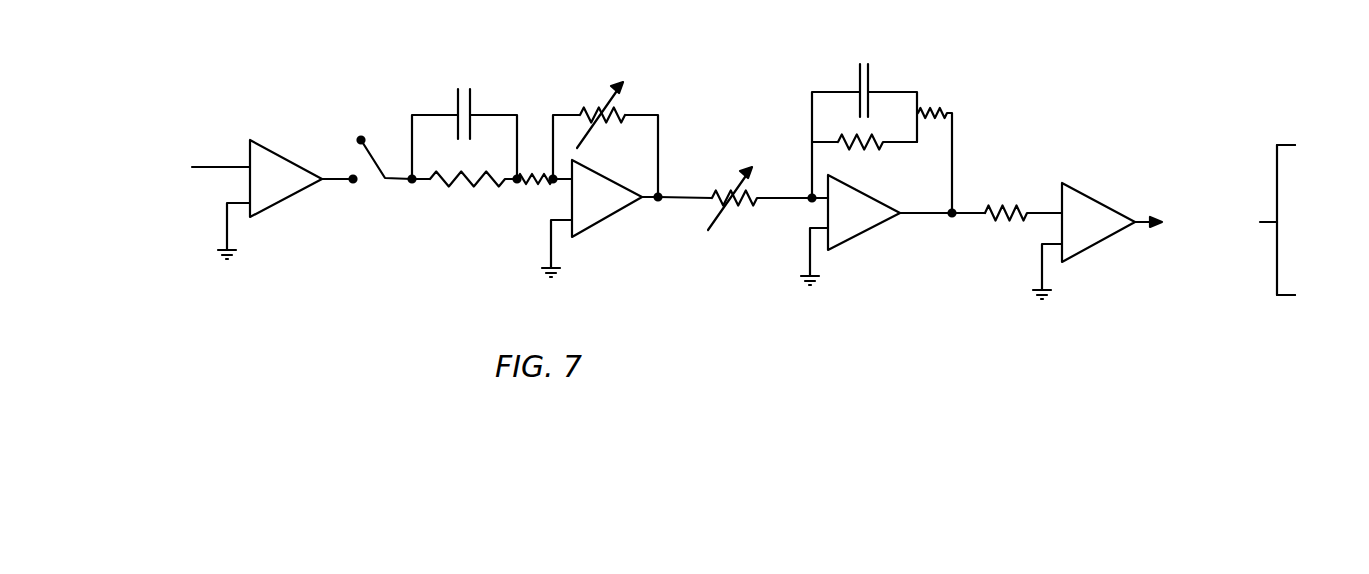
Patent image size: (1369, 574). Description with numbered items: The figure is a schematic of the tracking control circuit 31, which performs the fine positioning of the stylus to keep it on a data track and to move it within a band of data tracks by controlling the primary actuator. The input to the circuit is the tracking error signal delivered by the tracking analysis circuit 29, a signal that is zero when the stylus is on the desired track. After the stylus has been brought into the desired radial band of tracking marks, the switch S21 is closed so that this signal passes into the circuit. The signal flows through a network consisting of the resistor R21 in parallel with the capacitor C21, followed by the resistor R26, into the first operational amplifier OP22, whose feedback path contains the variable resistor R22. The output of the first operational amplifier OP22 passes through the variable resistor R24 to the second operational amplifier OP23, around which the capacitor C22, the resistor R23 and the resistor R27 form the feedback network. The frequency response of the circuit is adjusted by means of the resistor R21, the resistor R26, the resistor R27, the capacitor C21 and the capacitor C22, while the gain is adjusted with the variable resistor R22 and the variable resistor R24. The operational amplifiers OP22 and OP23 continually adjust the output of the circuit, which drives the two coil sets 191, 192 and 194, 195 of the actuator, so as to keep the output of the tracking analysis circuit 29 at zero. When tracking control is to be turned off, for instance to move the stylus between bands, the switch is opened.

The tracking control circuit 31 is at (718, 75).
The tracking analysis circuit 29 is at (174, 177).
The coil set 191 is at (1311, 177).
The coil set 192 is at (1309, 167).
The coil set 194 is at (1311, 266).
The coil set 195 is at (1309, 316).
The switch S21 is at (372, 139).
The capacitor C21 is at (464, 114).
The resistor R21 is at (464, 196).
The resistor R26 is at (542, 196).
The variable resistor R22 is at (605, 123).
The operational amplifier OP22 is at (600, 218).
The variable resistor R24 is at (735, 180).
The capacitor C22 is at (864, 115).
The resistor R23 is at (867, 155).
The resistor R27 is at (938, 144).
The operational amplifier OP23 is at (893, 230).